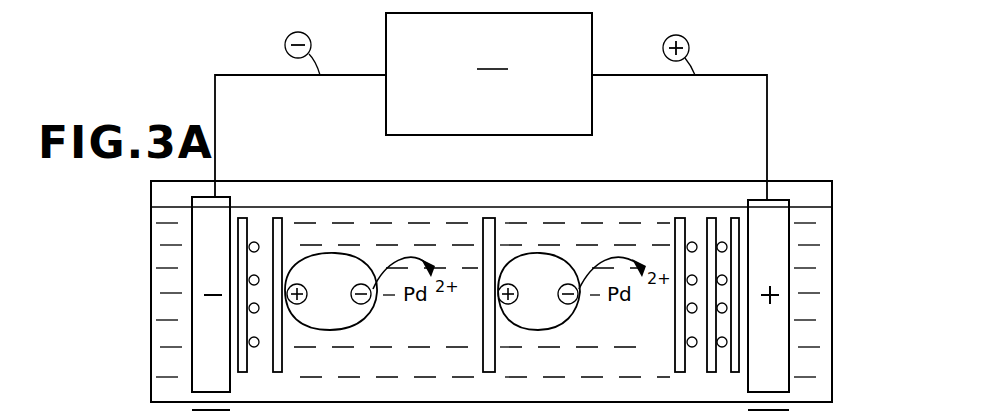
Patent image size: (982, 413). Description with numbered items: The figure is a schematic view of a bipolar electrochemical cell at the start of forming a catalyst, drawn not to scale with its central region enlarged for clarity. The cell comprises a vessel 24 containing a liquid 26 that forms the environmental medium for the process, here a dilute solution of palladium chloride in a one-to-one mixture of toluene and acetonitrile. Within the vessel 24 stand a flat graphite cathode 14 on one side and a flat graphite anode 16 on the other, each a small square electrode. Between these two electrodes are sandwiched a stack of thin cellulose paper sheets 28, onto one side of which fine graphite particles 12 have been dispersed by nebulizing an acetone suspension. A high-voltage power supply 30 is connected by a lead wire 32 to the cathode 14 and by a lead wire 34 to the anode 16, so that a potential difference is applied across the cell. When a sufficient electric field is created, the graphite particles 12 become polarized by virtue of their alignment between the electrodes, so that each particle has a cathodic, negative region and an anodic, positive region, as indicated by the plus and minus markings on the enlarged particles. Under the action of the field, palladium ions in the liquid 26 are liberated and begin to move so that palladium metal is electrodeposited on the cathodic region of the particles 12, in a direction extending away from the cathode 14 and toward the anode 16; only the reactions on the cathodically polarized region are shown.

The graphite particles 12 is at (256, 242).
The graphite cathode 14 is at (203, 338).
The graphite anode 16 is at (770, 318).
The vessel 24 is at (150, 197).
The liquid 26 is at (583, 207).
The cellulose paper sheets 28 is at (243, 218).
The power supply 30 is at (489, 74).
The lead wire 32 is at (262, 75).
The lead wire 34 is at (714, 75).